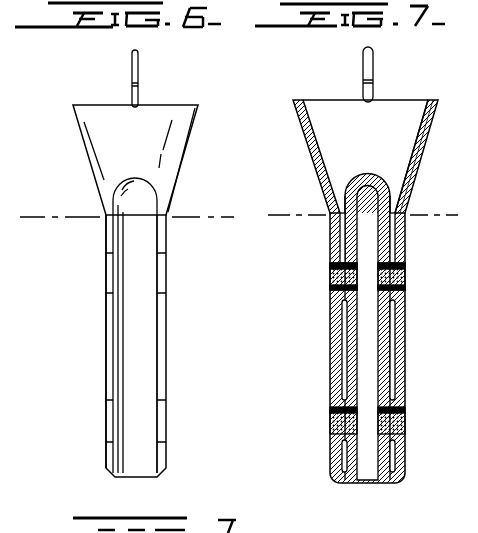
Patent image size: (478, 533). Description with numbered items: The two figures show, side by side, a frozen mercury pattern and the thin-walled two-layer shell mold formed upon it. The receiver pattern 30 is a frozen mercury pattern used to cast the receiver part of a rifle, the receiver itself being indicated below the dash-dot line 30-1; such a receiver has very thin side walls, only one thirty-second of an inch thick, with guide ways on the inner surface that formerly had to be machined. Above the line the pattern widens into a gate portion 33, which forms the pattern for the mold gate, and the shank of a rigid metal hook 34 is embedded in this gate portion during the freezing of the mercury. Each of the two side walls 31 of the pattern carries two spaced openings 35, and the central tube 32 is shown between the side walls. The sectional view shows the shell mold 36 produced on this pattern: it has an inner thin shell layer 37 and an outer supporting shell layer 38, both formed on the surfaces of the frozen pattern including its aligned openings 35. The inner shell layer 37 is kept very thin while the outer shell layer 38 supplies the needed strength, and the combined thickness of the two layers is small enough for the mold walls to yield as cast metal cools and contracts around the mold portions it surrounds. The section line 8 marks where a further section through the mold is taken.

In FIG. 6, the receiver pattern 30 is at (168, 233).
In FIG. 6, the dash-dot line 30-1 is at (84, 215).
In FIG. 6, the side walls 31 is at (190, 338).
In FIG. 6, the inner tube 32 is at (140, 372).
In FIG. 6, the gate portion 33 is at (182, 151).
In FIG. 6, the rigid metal hook 34 is at (139, 100).
In FIG. 6, the openings 35 is at (190, 420).
In FIG. 7, the openings 35 is at (438, 422).
In FIG. 7, the shell mold 36 is at (308, 101).
In FIG. 7, the inner shell layer 37 is at (421, 141).
In FIG. 7, the outer supporting shell layer 38 is at (431, 140).
In FIG. 7, the section line 8- 8 is at (435, 366).